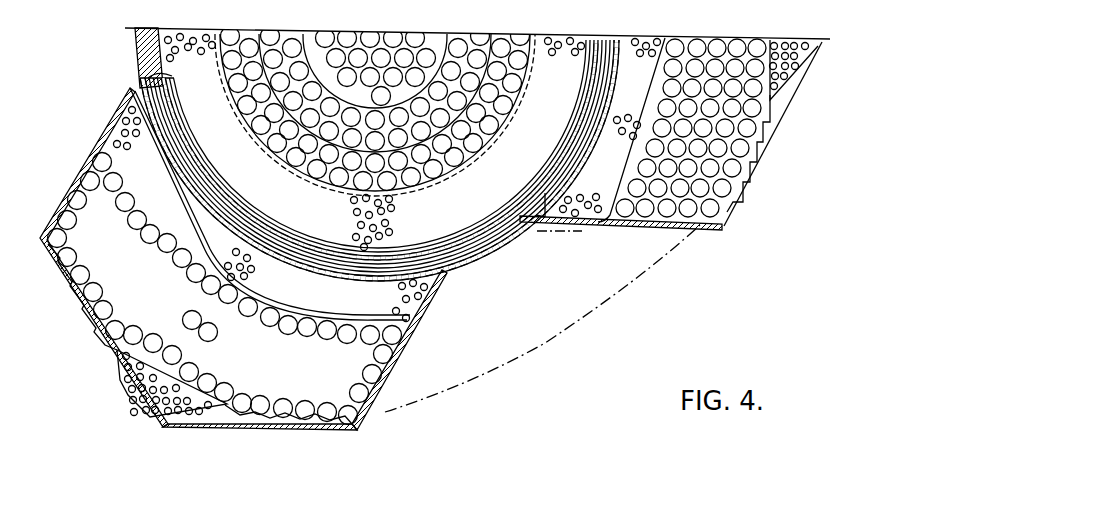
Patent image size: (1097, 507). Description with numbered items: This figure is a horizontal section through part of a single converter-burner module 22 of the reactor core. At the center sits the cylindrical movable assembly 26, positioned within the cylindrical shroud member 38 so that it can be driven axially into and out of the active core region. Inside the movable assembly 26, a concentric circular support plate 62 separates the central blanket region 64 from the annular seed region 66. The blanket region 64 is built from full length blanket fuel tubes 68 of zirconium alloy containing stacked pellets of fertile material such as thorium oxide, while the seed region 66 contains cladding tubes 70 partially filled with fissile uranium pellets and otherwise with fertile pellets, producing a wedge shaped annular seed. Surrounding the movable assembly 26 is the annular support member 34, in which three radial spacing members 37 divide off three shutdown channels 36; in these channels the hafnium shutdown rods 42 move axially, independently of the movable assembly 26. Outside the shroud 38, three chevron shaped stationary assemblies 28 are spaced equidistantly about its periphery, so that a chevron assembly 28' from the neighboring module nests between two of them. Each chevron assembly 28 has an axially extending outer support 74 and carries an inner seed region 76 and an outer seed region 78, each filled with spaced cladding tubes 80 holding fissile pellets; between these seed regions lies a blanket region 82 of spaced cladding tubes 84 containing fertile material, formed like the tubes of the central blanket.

The converter-burner module 22 is at (113, 58).
The movable assembly 26 is at (482, 208).
The chevron shaped stationary assembly 28 is at (431, 234).
The chevron assembly of adjacent module 28' is at (542, 318).
The annular support member 34 is at (214, 192).
The shutdown channel 36 is at (586, 97).
The radial spacing member 37 is at (163, 78).
The cylindrical shroud member 38 is at (513, 222).
The shutdown rod 42 is at (560, 148).
The concentric circular support plate 62 is at (216, 62).
The central blanket region 64 is at (426, 62).
The annular seed region 66 is at (267, 188).
The blanket fuel tube 68 is at (258, 33).
The cladding tube 70 is at (358, 222).
The outer support 74 is at (85, 160).
The inner seed region 76 is at (151, 177).
The outer seed region 78 is at (142, 382).
The cladding tube 80 is at (248, 272).
The blanket region 82 is at (129, 281).
The cladding tube 84 is at (728, 40).